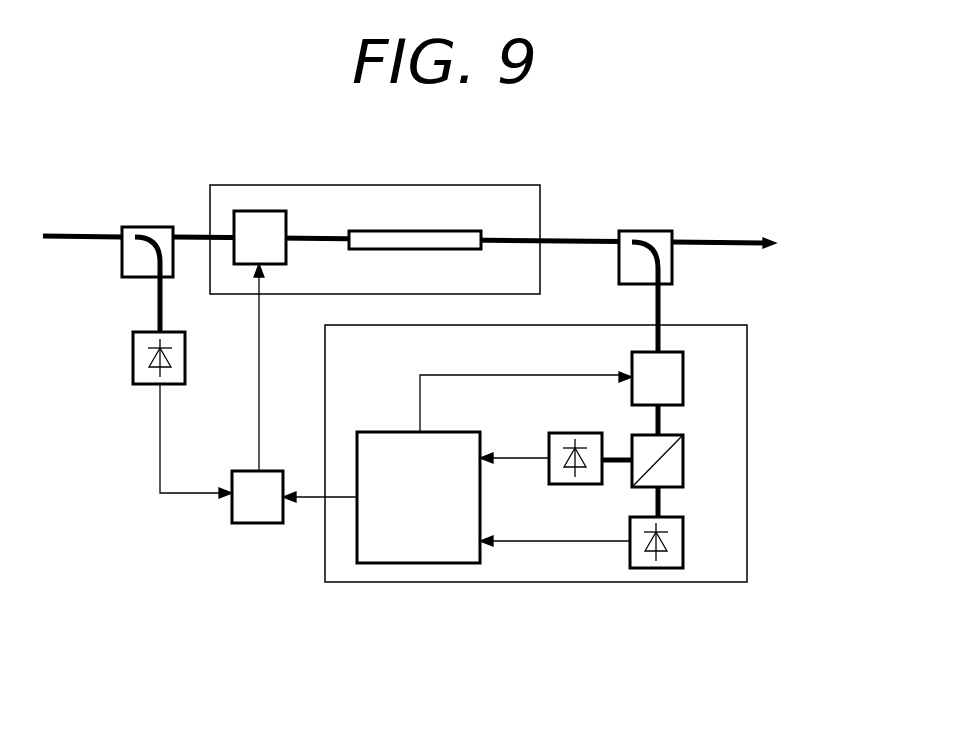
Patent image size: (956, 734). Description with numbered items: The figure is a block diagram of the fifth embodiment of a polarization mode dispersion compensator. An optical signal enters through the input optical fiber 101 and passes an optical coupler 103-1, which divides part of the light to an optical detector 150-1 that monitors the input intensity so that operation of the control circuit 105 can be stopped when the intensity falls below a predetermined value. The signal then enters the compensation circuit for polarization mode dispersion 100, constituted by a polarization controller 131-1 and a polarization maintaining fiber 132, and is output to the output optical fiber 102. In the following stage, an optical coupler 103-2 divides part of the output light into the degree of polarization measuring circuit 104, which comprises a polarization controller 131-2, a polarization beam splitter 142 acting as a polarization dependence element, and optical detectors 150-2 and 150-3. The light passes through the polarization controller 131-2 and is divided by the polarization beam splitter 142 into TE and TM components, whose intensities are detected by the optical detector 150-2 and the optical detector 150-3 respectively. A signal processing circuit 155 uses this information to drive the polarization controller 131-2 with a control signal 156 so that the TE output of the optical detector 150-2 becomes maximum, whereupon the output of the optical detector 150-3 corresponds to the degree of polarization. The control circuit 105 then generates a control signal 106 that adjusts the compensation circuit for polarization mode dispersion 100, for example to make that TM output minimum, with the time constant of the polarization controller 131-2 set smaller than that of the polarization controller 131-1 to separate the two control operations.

The input optical fiber 101 is at (90, 231).
The optical coupler 103-1 is at (165, 227).
The polarization controller 131-1 is at (270, 211).
The polarization maintaining fiber 132 is at (455, 231).
The compensation circuit for polarization mode dispersion 100 is at (508, 185).
The optical coupler 103-2 is at (660, 231).
The output optical fiber 102 is at (735, 241).
The degree of polarization measuring circuit 104 is at (718, 325).
The optical detector 150-1 is at (133, 352).
The control signal 106 is at (258, 355).
The control circuit 105 is at (268, 471).
The control signal 156 is at (418, 393).
The signal processing circuit 155 is at (452, 432).
The polarization controller 131-2 is at (683, 370).
The polarization beam splitter 142 is at (683, 455).
The optical detector 150-3 is at (683, 535).
The optical detector 150-2 is at (568, 484).